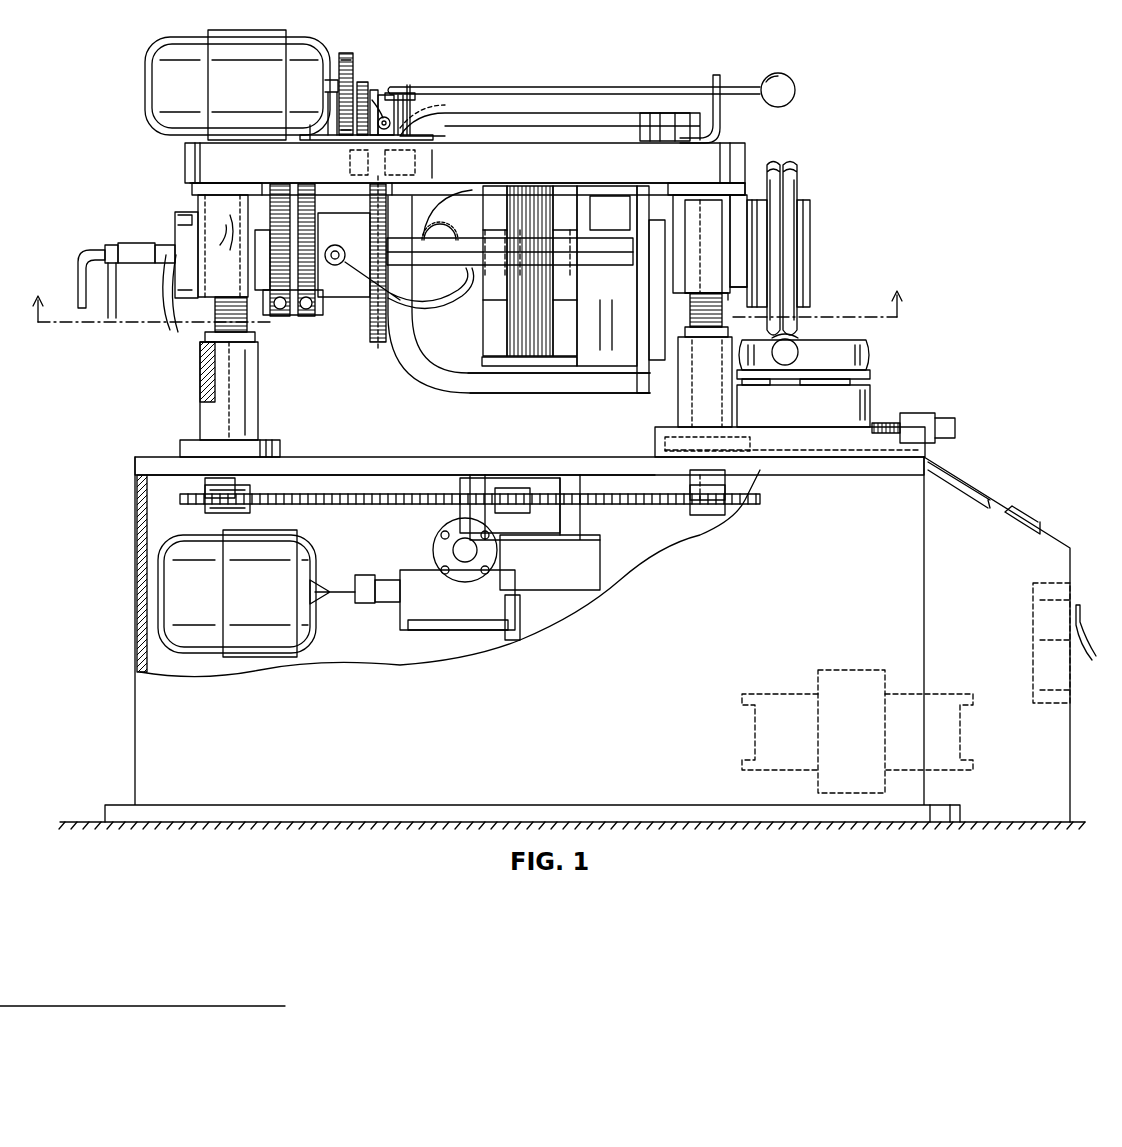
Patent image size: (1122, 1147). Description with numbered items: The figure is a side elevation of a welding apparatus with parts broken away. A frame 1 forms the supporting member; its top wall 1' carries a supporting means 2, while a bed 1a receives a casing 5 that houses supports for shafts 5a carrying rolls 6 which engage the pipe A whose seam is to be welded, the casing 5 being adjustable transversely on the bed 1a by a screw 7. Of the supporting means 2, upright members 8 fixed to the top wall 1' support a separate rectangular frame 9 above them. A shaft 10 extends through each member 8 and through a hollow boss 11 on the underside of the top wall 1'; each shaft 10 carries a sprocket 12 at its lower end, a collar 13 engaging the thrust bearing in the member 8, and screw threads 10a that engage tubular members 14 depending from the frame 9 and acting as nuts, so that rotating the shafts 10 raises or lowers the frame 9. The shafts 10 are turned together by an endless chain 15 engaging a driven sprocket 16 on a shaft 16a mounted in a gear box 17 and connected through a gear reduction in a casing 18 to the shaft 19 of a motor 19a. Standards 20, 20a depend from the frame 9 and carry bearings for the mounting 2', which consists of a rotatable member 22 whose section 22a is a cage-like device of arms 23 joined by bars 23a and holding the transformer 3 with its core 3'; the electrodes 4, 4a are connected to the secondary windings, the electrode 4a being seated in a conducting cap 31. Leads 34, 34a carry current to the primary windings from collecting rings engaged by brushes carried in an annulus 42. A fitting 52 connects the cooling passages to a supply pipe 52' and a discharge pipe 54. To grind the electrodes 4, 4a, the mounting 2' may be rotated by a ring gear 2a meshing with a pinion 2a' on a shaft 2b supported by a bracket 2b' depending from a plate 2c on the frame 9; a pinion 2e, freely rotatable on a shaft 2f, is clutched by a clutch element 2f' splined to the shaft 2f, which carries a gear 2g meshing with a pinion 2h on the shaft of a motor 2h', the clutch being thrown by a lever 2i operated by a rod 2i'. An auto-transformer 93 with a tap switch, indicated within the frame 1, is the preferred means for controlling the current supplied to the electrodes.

The frame 1 is at (577, 643).
The top wall 1' is at (529, 550).
The bed 1a is at (820, 460).
The supporting means 2 is at (465, 315).
The mounting 2' is at (484, 294).
The ring gear 2a is at (364, 269).
The pinion 2a' is at (550, 118).
The shaft 2b is at (410, 164).
The bracket 2b' is at (446, 210).
The plate 2c is at (328, 138).
The pinion 2e is at (368, 90).
The shaft 2f is at (395, 94).
The clutch element 2f' is at (413, 96).
The gear 2g is at (345, 68).
The pinion 2h is at (362, 80).
The motor 2h' is at (218, 85).
The lever 2i is at (426, 102).
The rod 2i' is at (591, 102).
The transformer 3 is at (548, 276).
The core 3' is at (538, 294).
The electrode 4 is at (770, 162).
The electrode 4a is at (786, 162).
The casing 5 is at (850, 440).
The shafts 5a is at (812, 388).
The work supporting and guide devices 6 is at (745, 354).
The screw 7 is at (876, 420).
The upright members 8 is at (260, 414).
The frame 9 is at (190, 167).
The shaft 10 is at (235, 372).
The screw threads 10a is at (248, 328).
The hollow boss 11 is at (205, 478).
The sprocket 12 is at (200, 500).
The collar 13 is at (200, 332).
The tubular members 14 is at (236, 212).
The endless chain 15 is at (470, 511).
The driven sprocket 16 is at (518, 498).
The shaft 16a is at (522, 626).
The gear box 17 is at (595, 556).
The casing 18 is at (456, 608).
The shaft 19 is at (357, 595).
The motor 19a is at (318, 634).
The standard 20 is at (200, 298).
The standard 20a is at (738, 234).
The member 22 is at (635, 297).
The section 22a is at (452, 368).
The arms 23 is at (520, 386).
The bars 23a is at (640, 190).
The cap 31 is at (810, 232).
The lead 34 is at (430, 298).
The lead 34a is at (445, 226).
The annulus 42 is at (280, 186).
The fitting 52 is at (127, 242).
The supply pipe 52' is at (73, 275).
The pipe 54 is at (108, 312).
The auto-transformer 93 is at (788, 702).
The pipe A is at (792, 338).